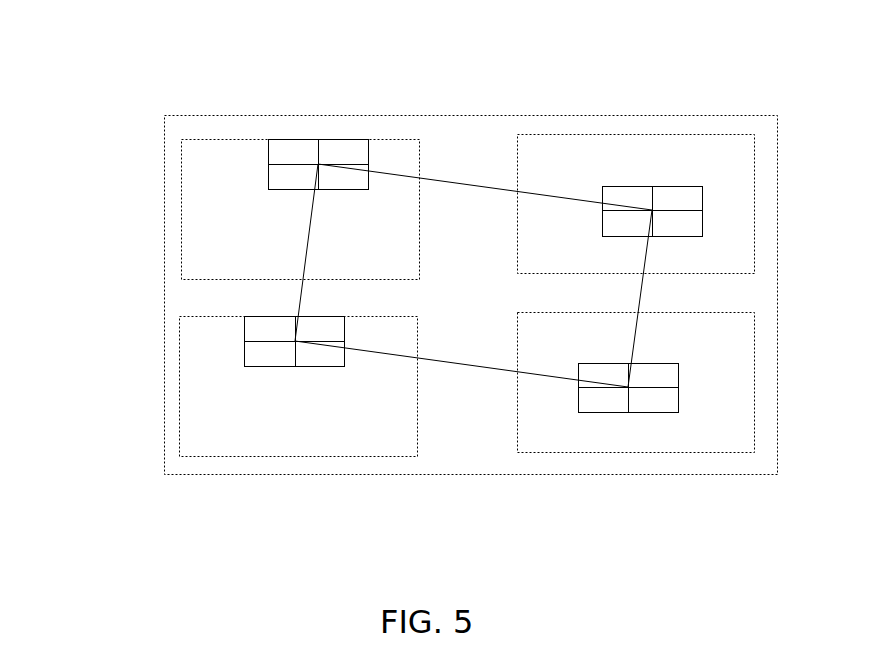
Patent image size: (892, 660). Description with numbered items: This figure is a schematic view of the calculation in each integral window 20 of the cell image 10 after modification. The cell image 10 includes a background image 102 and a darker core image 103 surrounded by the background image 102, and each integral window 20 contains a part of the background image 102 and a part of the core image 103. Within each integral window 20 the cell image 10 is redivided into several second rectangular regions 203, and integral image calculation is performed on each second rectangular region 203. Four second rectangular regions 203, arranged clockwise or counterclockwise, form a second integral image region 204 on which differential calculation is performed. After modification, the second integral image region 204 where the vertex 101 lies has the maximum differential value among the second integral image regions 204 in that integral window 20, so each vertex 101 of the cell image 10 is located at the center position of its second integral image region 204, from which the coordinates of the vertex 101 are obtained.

The cell image 10 is at (483, 115).
The integral window 20 is at (182, 205).
The vertex 101 is at (318, 164).
The background image 102 is at (190, 298).
The core image 103 is at (483, 352).
The second rectangular region 203 is at (280, 155).
The second integral image region 204 is at (267, 172).